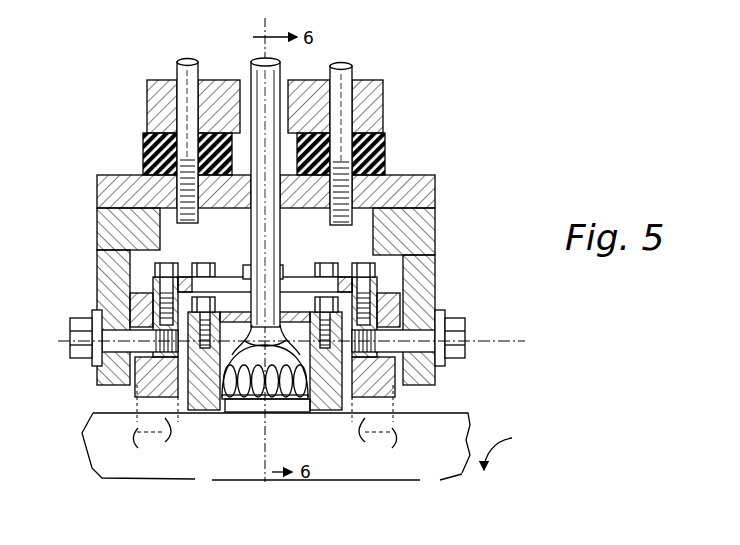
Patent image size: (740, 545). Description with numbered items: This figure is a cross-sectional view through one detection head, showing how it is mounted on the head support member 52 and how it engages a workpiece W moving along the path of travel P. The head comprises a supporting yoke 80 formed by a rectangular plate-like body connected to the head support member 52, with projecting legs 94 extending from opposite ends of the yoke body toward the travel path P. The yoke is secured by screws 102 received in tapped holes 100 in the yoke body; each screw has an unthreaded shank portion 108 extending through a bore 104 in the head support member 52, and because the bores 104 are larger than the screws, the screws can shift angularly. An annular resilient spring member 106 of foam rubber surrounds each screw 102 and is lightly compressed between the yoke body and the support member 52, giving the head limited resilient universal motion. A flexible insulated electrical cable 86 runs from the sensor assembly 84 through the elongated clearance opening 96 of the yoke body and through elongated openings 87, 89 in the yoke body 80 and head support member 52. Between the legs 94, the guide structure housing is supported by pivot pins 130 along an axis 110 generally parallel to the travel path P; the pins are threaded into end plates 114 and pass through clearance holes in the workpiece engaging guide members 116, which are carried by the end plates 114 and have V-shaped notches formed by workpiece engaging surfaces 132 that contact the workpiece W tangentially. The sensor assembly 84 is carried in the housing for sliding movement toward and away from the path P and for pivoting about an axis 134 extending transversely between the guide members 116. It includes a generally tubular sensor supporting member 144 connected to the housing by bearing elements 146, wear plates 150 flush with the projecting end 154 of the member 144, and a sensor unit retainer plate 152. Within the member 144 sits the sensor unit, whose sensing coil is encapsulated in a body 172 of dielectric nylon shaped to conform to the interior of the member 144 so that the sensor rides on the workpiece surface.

The head support member 52 is at (150, 112).
The supporting yoke 80 is at (271, 260).
The sensor assembly 84 is at (320, 415).
The flexible insulated electrical cable 86 is at (283, 225).
The elongated opening 87 is at (243, 193).
The elongated opening 89 is at (246, 84).
The projecting legs 94 is at (436, 226).
The elongated clearance opening 96 is at (160, 232).
The tapped holes 100 is at (160, 186).
The screws 102 is at (155, 152).
The bores 104 is at (177, 80).
The annular resilient spring member 106 is at (388, 150).
The unthreaded shank portion 108 is at (177, 110).
The axis 110 is at (498, 342).
The end plates 114 is at (380, 292).
The workpiece engaging guide members 116 is at (132, 443).
The pivot pins 130 is at (93, 320).
The workpiece engaging surfaces 132 is at (170, 435).
The axis 134 is at (277, 320).
The sensor supporting member 144 is at (398, 390).
The bearing elements 146 is at (308, 412).
The wear plates 150 is at (175, 412).
The sensor unit retainer plate 152 is at (230, 320).
The projecting end 154 is at (252, 415).
The body of dielectric coil supporting material 172 is at (240, 412).
The workpiece W is at (470, 408).
The path of travel P is at (503, 448).